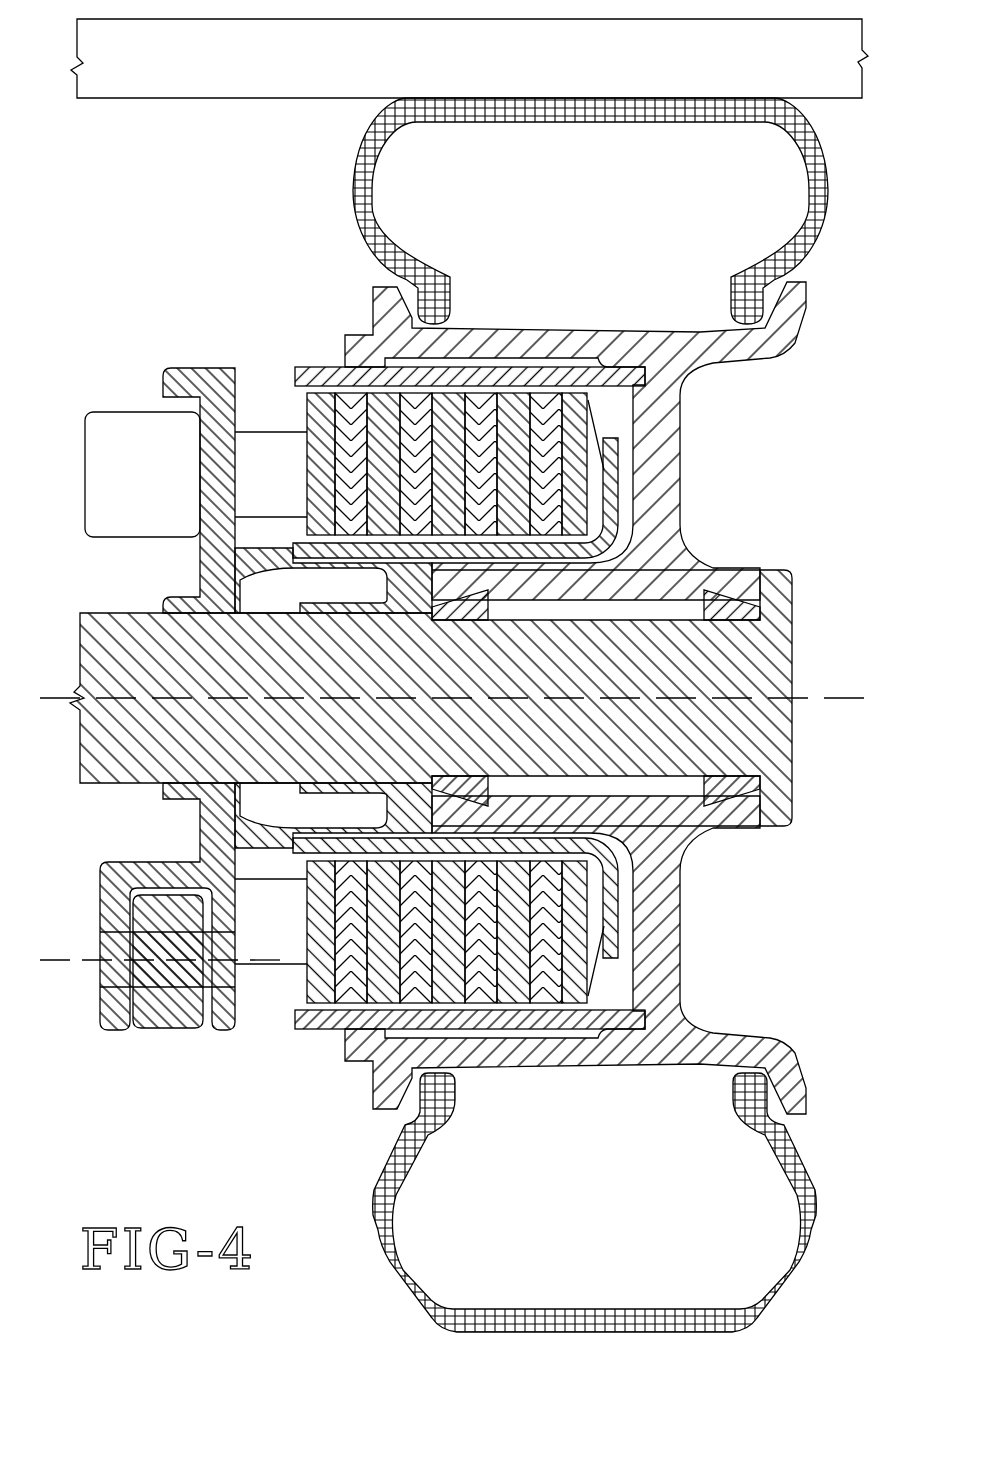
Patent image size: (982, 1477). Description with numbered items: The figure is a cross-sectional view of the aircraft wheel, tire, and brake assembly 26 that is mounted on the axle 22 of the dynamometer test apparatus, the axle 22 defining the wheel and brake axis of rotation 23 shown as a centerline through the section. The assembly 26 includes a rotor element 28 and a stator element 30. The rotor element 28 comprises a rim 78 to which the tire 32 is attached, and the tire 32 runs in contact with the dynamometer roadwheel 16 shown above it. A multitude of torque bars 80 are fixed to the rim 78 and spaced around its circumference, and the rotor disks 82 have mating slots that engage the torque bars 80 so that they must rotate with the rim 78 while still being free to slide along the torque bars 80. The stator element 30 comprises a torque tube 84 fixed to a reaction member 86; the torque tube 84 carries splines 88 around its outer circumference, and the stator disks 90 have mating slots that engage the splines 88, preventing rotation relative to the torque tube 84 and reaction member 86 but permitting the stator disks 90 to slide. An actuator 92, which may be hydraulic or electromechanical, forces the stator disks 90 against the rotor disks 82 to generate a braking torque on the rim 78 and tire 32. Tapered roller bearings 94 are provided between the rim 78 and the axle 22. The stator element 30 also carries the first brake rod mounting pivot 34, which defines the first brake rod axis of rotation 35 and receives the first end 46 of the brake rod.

The dynamometer roadwheel 16 is at (483, 78).
The axle 22 is at (421, 673).
The wheel and brake axis of rotation 23 is at (828, 698).
The aircraft wheel, tire, and brake assembly 26 is at (498, 715).
The rotor element 28 is at (520, 694).
The stator element 30 is at (166, 667).
The tire 32 is at (362, 190).
The first brake rod mounting pivot 34 is at (105, 944).
The first brake rod axis of rotation 35 is at (72, 963).
The first end 46 is at (165, 1018).
The rim 78 is at (654, 367).
The torque bars 80 is at (303, 374).
The rotor disks 82 is at (337, 475).
The torque tube 84 is at (340, 563).
The reaction member 86 is at (195, 363).
The splines 88 is at (300, 548).
The stator disks 90 is at (312, 414).
The actuator 92 is at (129, 483).
The tapered roller bearings 94 is at (442, 608).